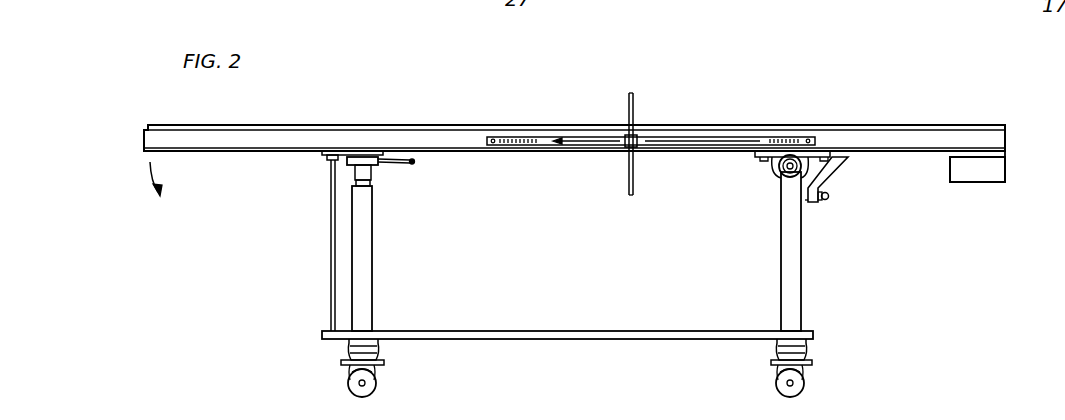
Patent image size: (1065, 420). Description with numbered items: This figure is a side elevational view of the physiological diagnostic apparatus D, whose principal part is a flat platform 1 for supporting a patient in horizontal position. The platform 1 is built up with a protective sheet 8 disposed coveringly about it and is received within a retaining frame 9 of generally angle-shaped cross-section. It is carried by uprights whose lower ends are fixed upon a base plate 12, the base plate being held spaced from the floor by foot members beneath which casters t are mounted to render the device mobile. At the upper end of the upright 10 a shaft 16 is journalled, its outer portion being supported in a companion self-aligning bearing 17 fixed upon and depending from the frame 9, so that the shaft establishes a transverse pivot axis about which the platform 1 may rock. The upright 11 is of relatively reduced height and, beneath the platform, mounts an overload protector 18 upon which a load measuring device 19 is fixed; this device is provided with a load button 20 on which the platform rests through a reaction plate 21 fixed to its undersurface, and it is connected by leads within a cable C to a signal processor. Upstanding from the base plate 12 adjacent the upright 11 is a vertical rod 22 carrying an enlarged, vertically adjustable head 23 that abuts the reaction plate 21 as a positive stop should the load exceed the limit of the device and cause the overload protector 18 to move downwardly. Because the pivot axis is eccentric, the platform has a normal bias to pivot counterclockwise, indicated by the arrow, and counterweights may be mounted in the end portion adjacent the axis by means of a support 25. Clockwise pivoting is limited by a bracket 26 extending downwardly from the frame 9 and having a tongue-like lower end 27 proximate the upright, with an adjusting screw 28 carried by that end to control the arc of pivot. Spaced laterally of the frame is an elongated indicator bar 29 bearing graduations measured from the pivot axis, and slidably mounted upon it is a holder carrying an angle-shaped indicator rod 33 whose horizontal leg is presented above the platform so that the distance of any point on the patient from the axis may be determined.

The platform 1 is at (844, 126).
The protective sheet 8 is at (955, 126).
The retaining frame 9 is at (994, 148).
The upright 10 is at (790, 270).
The upright 11 is at (368, 292).
The base plate 12 is at (520, 331).
The shaft 16 is at (790, 160).
The self-aligning bearing 17 is at (777, 172).
The overload protector 18 is at (372, 180).
The load measuring device 19 is at (383, 158).
The load button 20 is at (371, 152).
The reaction plate 21 is at (337, 151).
The vertical rod 22 is at (330, 241).
The head 23 is at (330, 158).
The support 25 is at (967, 180).
The bracket 26 is at (835, 170).
The tongue-like lower end 27 is at (803, 202).
The adjusting screw 28 is at (826, 195).
The indicator bar 29 is at (497, 137).
The indicator rod 33 is at (637, 100).
The cable C is at (410, 164).
The physiological diagnostic apparatus D is at (855, 281).
The caster t is at (807, 376).